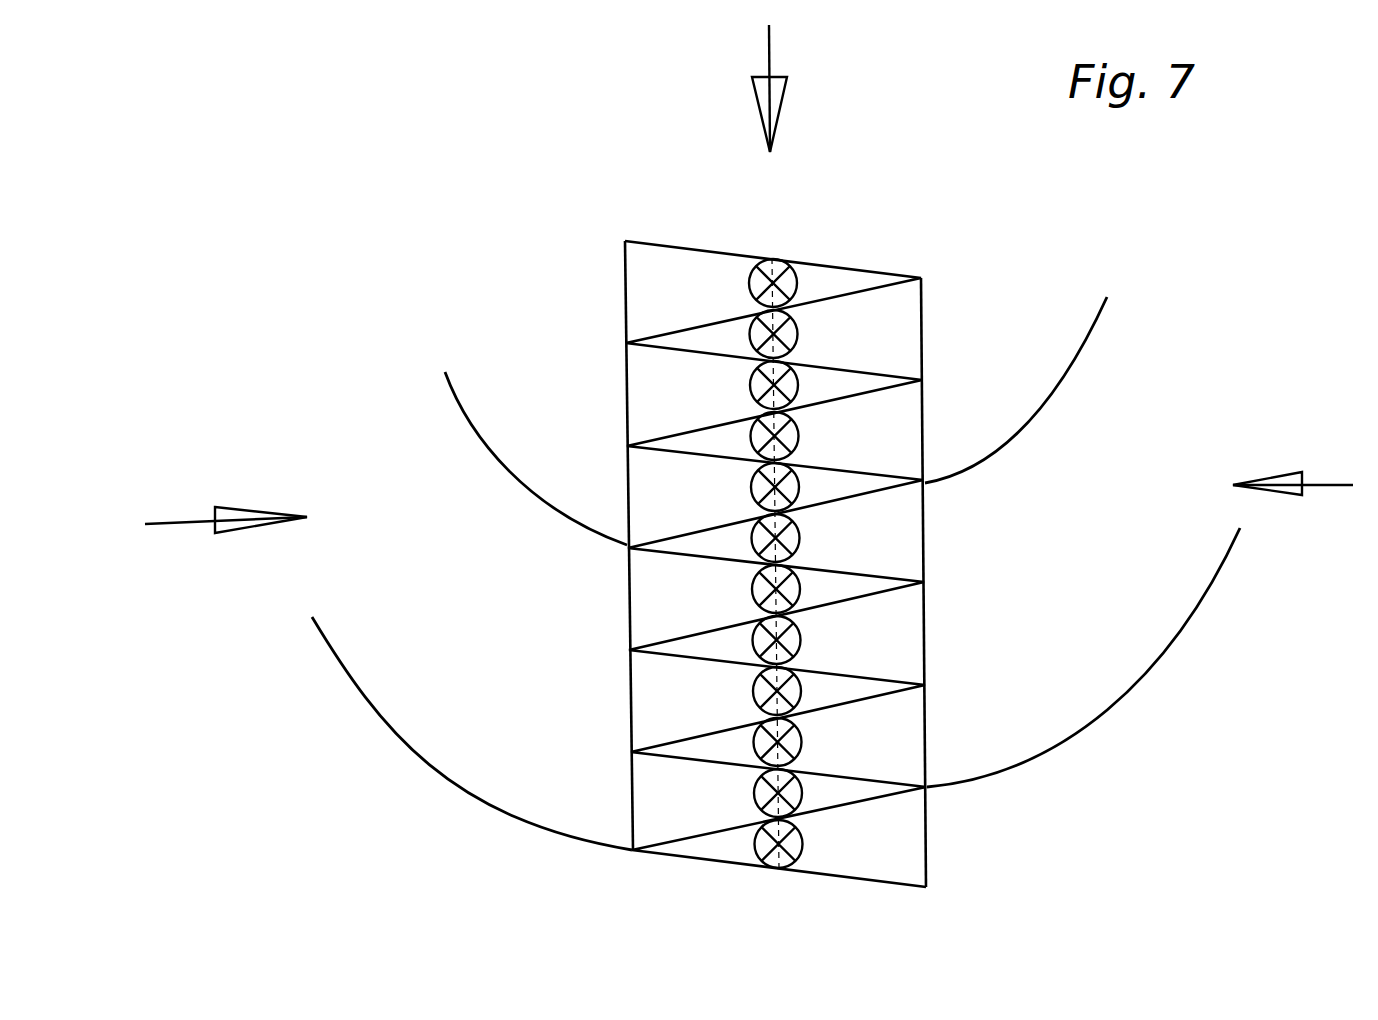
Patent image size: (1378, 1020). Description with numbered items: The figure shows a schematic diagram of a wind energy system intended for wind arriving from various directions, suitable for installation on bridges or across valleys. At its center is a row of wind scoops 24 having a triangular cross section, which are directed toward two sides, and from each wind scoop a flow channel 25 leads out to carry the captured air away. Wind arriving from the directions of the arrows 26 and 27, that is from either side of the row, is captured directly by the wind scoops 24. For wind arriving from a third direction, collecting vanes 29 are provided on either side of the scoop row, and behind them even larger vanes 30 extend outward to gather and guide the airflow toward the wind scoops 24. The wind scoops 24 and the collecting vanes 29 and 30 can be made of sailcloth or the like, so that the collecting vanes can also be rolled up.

The wind scoops 24 is at (853, 458).
The flow channel 25 is at (762, 535).
The arrow 26 is at (230, 523).
The arrow 27 is at (1290, 488).
The collecting vanes 29 is at (487, 442).
The vanes 30 is at (410, 747).